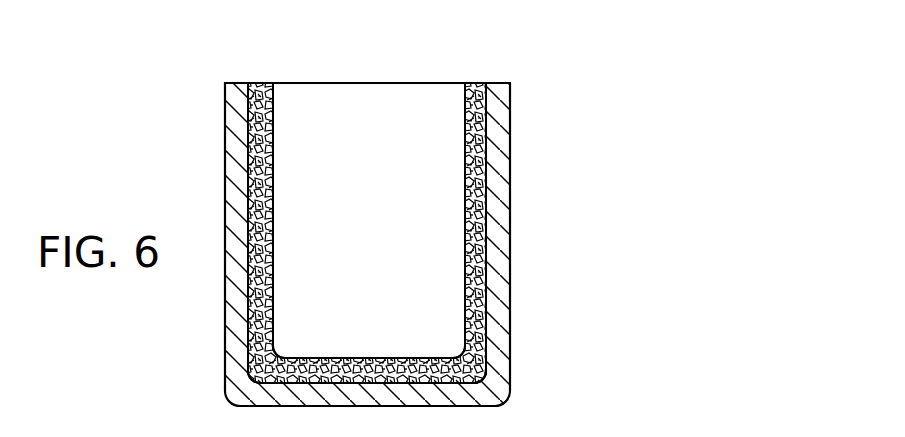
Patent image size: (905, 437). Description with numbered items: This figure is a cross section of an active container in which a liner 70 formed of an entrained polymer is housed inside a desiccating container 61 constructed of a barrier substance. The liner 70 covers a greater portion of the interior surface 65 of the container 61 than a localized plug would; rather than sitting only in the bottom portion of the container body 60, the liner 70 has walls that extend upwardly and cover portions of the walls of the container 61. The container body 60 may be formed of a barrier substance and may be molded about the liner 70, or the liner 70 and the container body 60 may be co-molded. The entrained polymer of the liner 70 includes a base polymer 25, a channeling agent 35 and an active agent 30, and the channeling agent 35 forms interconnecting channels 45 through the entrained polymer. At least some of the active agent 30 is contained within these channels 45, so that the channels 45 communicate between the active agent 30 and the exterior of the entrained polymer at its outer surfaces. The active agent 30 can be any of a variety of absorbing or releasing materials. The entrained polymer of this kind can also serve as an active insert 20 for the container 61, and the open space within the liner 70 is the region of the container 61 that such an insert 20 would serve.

The active insert 20 is at (441, 202).
The base polymer 25 is at (468, 138).
The active agent 30 is at (468, 101).
The channeling agent 35 is at (489, 199).
The interconnecting channels 45 is at (486, 84).
The container body 60 is at (511, 272).
The container 61 is at (521, 153).
The interior surface 65 is at (487, 300).
The liner 70 is at (482, 352).